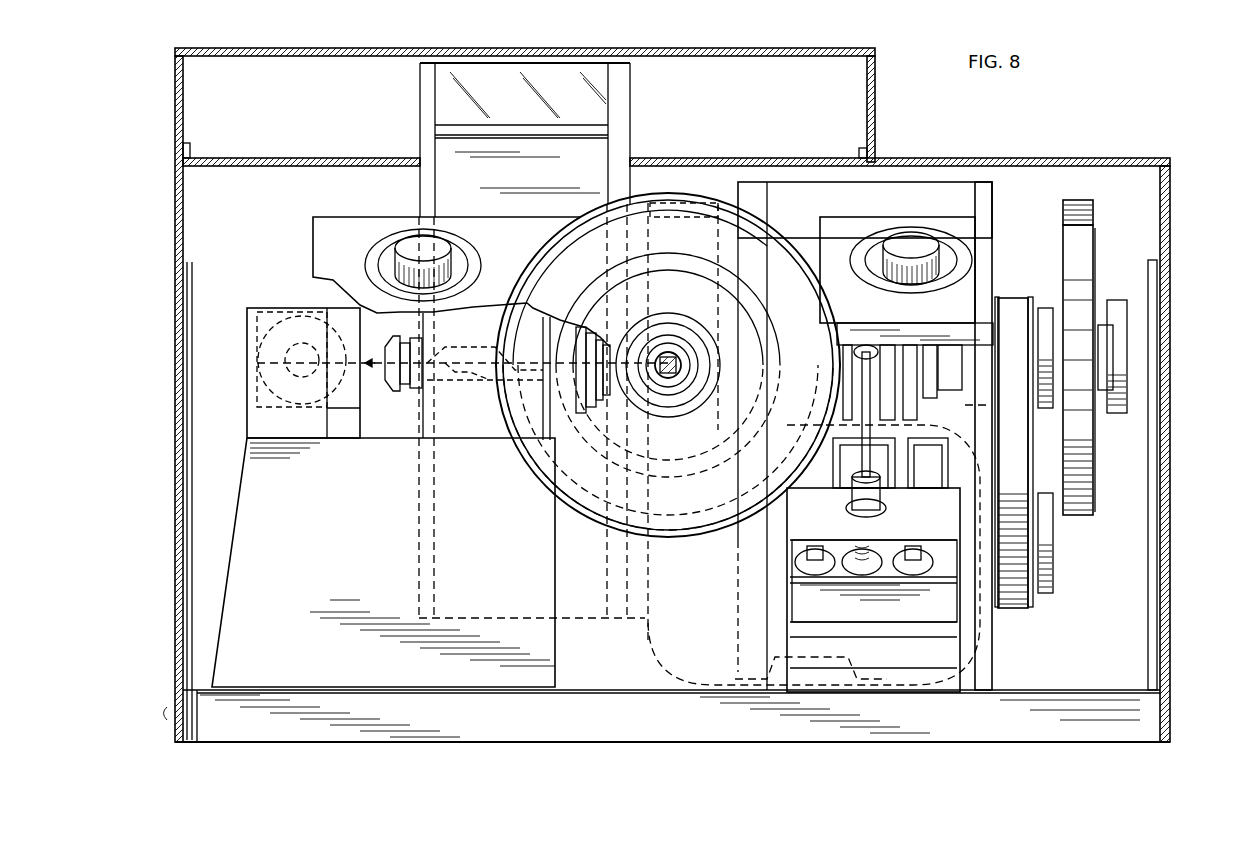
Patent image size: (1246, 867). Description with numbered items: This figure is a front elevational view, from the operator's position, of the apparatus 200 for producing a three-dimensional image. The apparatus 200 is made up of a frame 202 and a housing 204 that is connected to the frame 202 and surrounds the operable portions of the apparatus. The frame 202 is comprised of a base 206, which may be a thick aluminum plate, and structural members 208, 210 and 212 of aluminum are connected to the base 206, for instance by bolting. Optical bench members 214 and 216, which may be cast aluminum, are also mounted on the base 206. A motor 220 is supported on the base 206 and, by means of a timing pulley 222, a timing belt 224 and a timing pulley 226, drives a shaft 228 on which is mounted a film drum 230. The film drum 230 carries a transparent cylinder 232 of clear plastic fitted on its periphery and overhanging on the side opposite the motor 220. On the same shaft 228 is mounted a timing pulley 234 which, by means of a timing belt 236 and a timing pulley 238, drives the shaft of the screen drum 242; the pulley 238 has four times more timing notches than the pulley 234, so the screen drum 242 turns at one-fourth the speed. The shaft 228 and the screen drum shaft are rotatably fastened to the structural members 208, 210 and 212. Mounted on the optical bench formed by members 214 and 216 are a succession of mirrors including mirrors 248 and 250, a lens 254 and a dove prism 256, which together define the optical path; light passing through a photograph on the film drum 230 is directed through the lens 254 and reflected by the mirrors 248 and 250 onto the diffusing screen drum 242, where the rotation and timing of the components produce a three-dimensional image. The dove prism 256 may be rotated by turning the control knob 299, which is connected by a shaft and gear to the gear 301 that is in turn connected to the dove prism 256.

The apparatus 200 is at (1175, 329).
The frame 202 is at (523, 738).
The housing 204 is at (176, 470).
The base 206 is at (349, 738).
The structural member 208 is at (768, 198).
The structural member 210 is at (992, 221).
The structural member 212 is at (903, 208).
The optical bench member 214 is at (340, 546).
The optical bench member 216 is at (250, 363).
The motor 220 is at (703, 614).
The timing pulley 222 is at (1028, 604).
The timing belt 224 is at (1022, 478).
The timing pulley 226 is at (1030, 415).
The shaft 228 is at (733, 366).
The film drum 230 is at (702, 222).
The transparent cylinder 232 is at (661, 210).
The timing pulley 234 is at (1102, 385).
The timing belt 236 is at (1092, 250).
The timing pulley 238 is at (1095, 212).
The screen drum 242 is at (630, 108).
The mirror 248 is at (266, 311).
The mirror 250 is at (340, 310).
The lens 254 is at (583, 325).
The dove prism 256 is at (457, 372).
The control knob 299 is at (455, 263).
The gear 301 is at (388, 343).